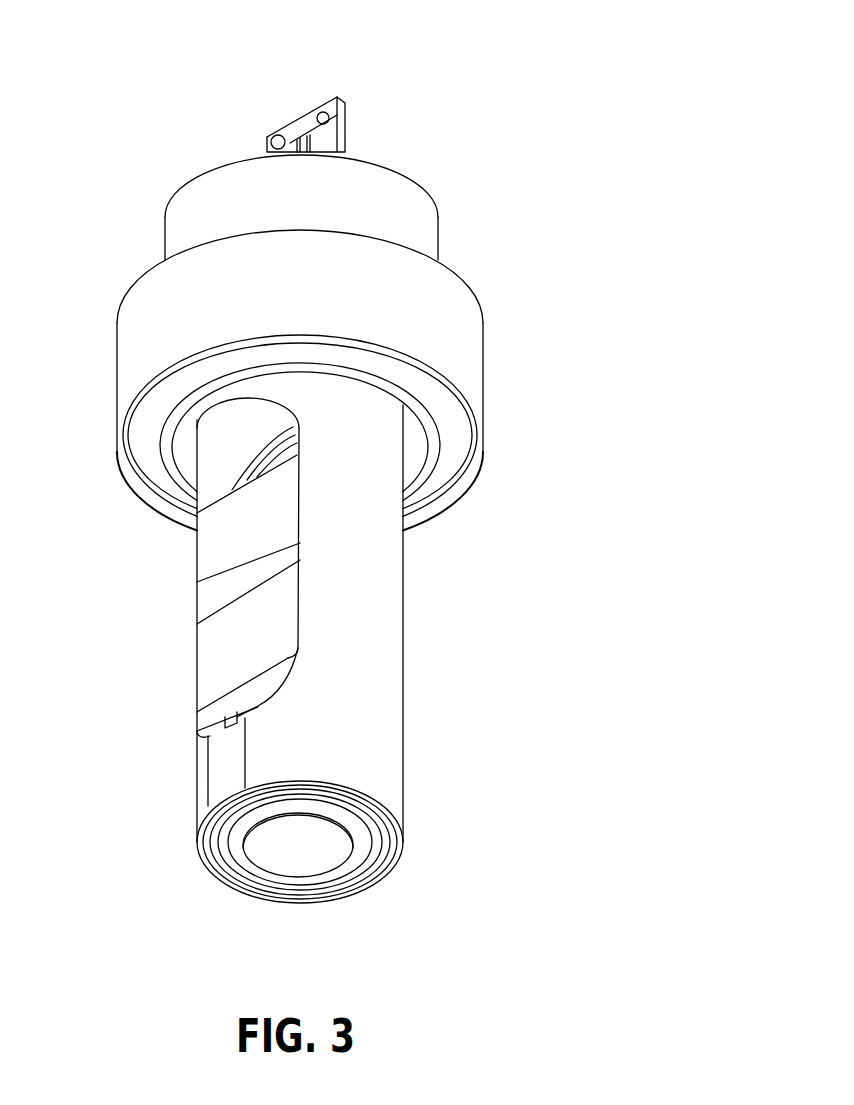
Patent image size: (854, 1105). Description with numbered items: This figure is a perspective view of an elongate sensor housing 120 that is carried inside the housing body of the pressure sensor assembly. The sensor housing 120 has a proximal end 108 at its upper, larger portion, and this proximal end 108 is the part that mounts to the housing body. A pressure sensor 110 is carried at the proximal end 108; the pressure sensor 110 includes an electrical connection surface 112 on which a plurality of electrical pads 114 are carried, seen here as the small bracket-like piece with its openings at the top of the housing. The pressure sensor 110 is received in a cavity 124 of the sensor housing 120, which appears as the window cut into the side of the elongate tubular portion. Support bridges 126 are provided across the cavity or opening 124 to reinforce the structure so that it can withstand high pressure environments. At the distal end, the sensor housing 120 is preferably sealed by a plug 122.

The proximal end 108 is at (485, 345).
The pressure sensor 110 is at (364, 103).
The electrical connection surface 112 is at (297, 112).
The electrical pads 114 is at (320, 107).
The sensor housing 120 is at (572, 614).
The plug 122 is at (333, 818).
The cavity 124 is at (215, 477).
The support bridges 126 is at (223, 567).